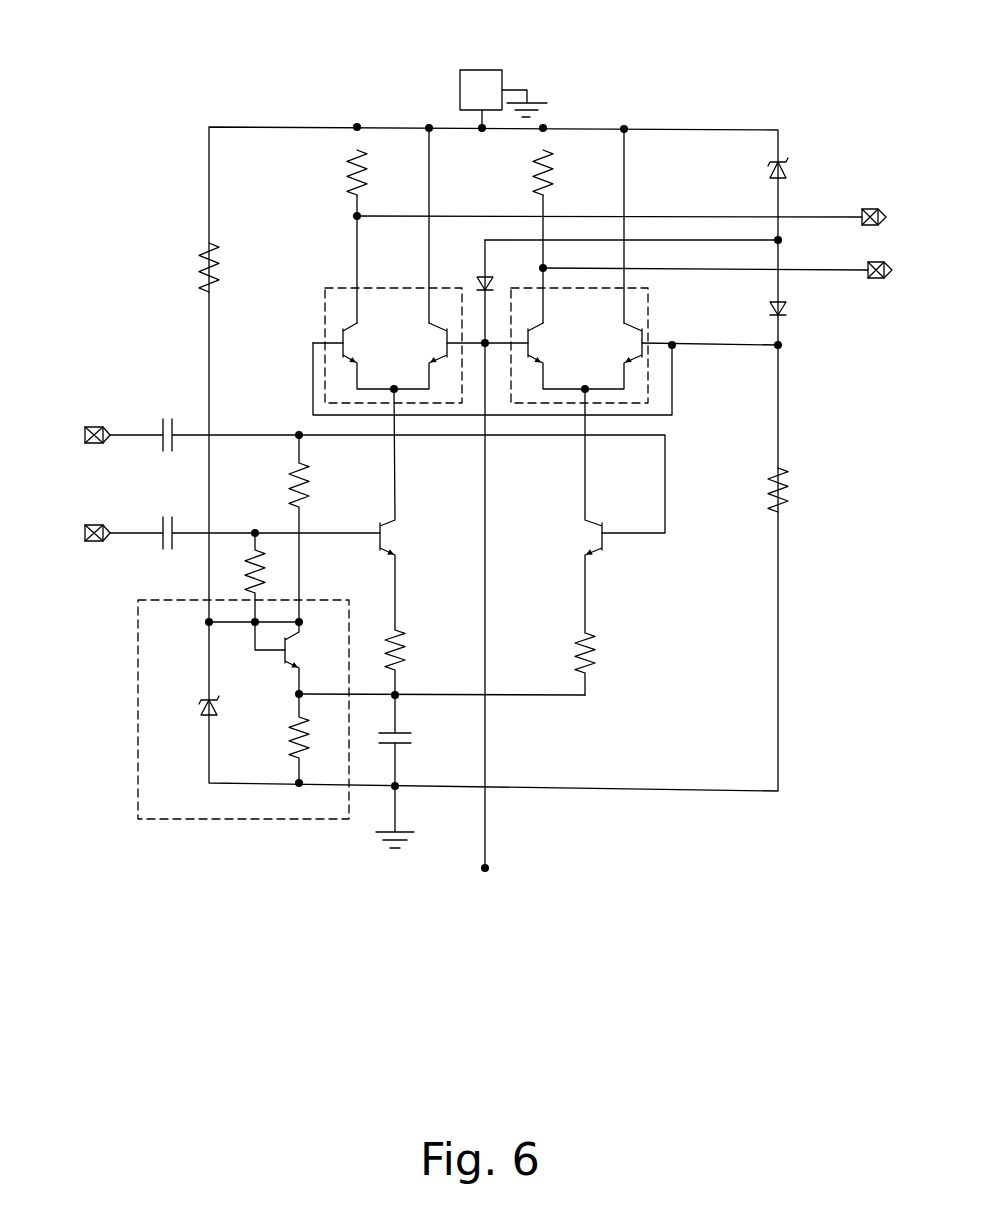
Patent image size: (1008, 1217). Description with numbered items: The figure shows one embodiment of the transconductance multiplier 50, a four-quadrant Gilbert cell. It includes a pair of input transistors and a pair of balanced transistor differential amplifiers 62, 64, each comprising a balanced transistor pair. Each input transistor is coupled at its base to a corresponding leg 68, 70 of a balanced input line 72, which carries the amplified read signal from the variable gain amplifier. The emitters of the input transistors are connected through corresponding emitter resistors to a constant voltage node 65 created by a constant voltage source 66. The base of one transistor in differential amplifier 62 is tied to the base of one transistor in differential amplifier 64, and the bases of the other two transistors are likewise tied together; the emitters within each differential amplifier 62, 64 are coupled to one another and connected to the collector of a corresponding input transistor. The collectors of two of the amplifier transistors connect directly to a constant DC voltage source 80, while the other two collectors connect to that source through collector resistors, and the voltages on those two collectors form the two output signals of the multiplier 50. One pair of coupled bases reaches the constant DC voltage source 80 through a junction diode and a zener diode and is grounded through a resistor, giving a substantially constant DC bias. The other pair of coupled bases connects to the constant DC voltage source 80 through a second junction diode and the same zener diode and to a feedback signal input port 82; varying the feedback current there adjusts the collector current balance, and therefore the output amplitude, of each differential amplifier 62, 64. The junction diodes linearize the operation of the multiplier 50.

The transconductance multiplier 50 is at (250, 78).
The balanced transistor differential amplifier 62 is at (648, 289).
The balanced transistor differential amplifier 64 is at (345, 287).
The constant voltage node 65 is at (400, 692).
The constant voltage source 66 is at (183, 820).
The leg of balanced input line 68 is at (85, 434).
The leg of balanced input line 70 is at (85, 533).
The balanced input line 72 is at (139, 433).
The constant DC voltage source 80 is at (483, 70).
The feedback signal input port 82 is at (494, 866).